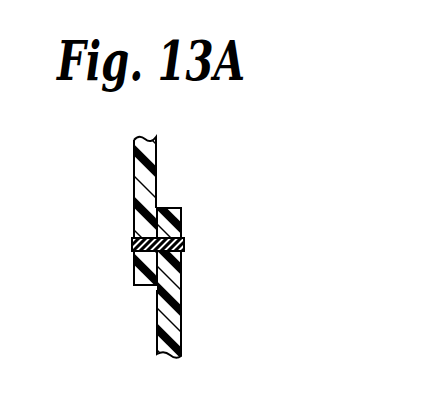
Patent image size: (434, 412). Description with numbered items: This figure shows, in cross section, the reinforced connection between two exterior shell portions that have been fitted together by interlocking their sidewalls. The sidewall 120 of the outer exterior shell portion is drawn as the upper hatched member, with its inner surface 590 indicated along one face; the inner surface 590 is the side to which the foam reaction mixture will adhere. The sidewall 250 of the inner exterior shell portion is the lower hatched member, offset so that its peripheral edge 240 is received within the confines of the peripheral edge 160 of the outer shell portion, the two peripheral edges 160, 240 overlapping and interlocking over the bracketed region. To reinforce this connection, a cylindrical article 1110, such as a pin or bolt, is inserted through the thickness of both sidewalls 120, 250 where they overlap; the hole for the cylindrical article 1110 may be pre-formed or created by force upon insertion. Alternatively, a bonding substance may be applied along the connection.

The sidewall 120 is at (134, 147).
The inner surface 590 is at (158, 157).
The cylindrical article 1110 is at (134, 245).
The peripheral edge 160 is at (80, 205).
The peripheral edge 240 is at (193, 205).
The sidewall 250 is at (158, 320).